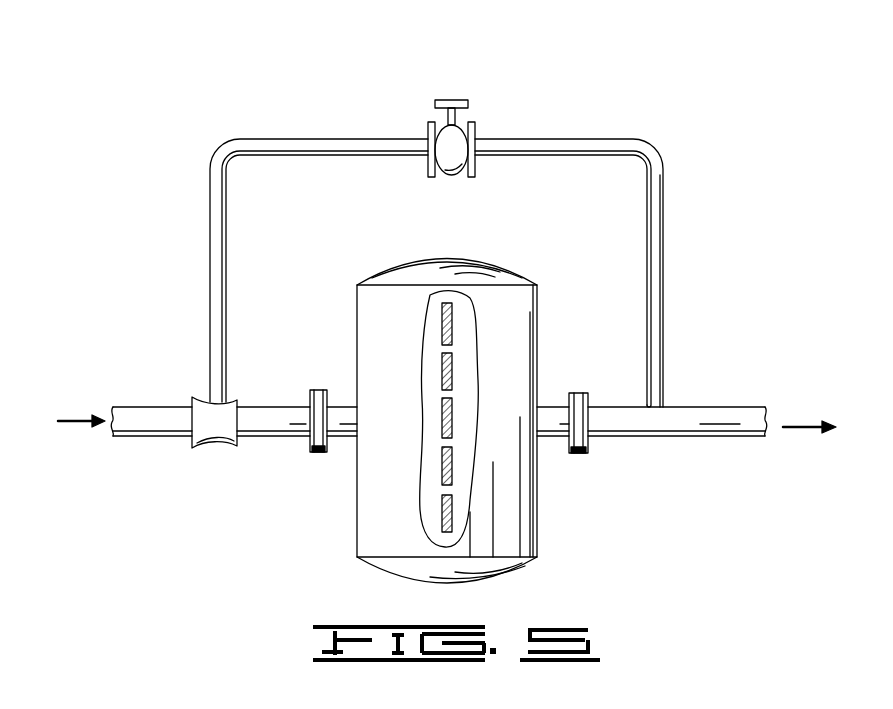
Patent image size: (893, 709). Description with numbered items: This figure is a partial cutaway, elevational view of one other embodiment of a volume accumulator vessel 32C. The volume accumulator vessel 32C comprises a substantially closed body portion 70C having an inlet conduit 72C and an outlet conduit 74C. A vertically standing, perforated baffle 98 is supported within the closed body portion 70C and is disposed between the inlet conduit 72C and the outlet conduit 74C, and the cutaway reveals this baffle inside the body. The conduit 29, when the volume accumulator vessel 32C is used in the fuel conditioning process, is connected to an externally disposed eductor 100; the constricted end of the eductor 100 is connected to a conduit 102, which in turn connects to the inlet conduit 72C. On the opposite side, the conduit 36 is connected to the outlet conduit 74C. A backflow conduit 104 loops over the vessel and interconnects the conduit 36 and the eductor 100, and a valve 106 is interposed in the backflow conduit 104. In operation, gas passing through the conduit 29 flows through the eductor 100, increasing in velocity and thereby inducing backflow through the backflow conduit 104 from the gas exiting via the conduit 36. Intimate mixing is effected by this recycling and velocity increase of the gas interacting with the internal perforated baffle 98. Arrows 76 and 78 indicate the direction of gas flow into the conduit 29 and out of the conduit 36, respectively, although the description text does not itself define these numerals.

The conduit 29 is at (140, 412).
The conduit 36 is at (737, 426).
The closed body portion 70C is at (512, 530).
The inlet conduit 72C is at (320, 390).
The outlet conduit 74C is at (577, 393).
The inlet flow direction 76 is at (70, 423).
The outlet flow direction 78 is at (800, 430).
The perforated baffle 98 is at (446, 366).
The eductor 100 is at (206, 423).
The conduit 102 is at (258, 426).
The backflow conduit 104 is at (210, 205).
The valve 106 is at (446, 100).
The volume accumulator vessel 32C is at (376, 266).